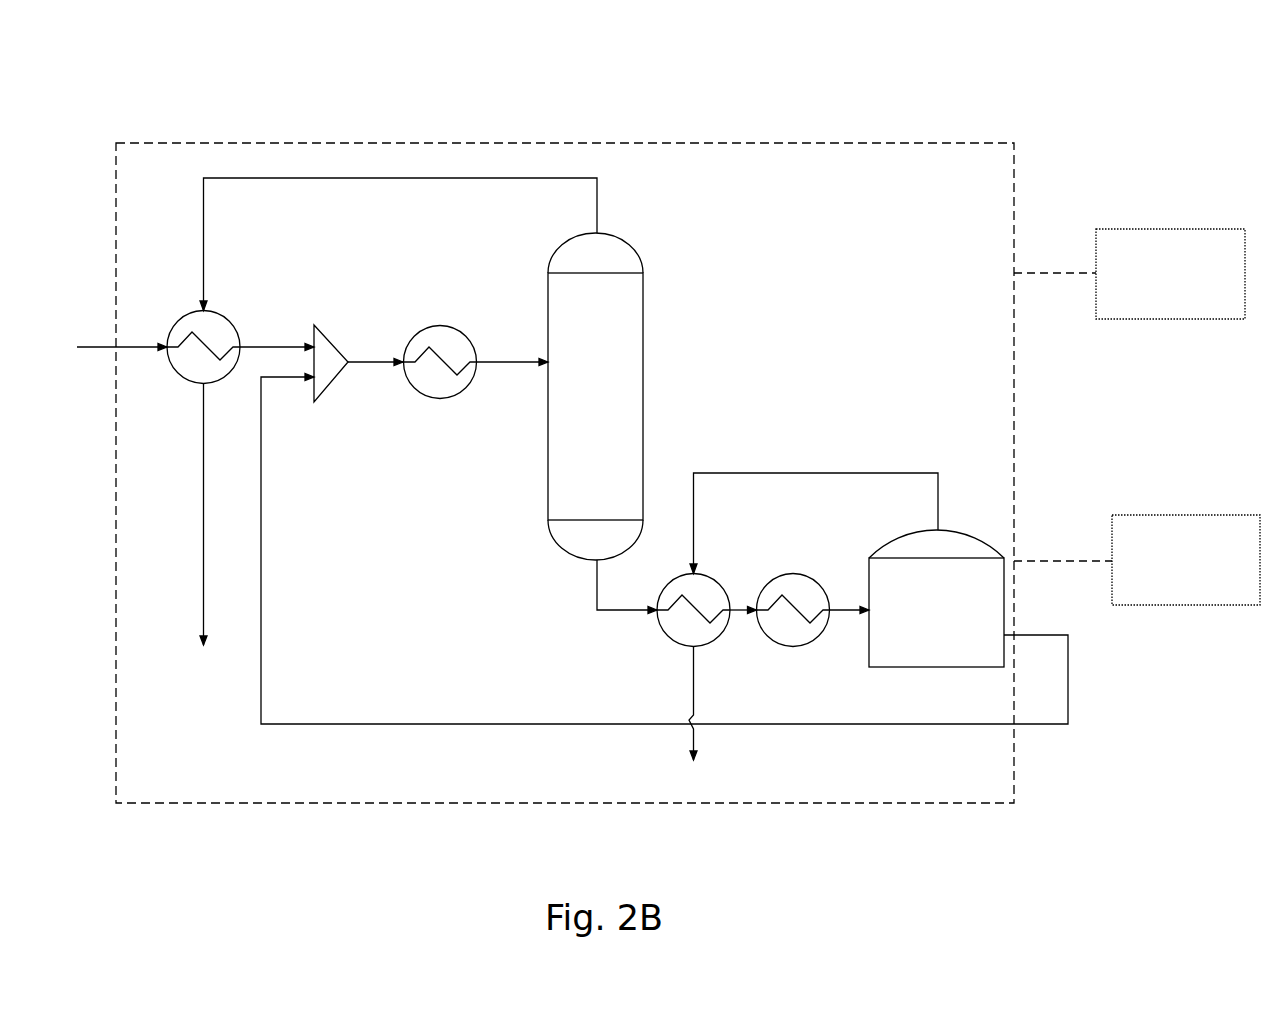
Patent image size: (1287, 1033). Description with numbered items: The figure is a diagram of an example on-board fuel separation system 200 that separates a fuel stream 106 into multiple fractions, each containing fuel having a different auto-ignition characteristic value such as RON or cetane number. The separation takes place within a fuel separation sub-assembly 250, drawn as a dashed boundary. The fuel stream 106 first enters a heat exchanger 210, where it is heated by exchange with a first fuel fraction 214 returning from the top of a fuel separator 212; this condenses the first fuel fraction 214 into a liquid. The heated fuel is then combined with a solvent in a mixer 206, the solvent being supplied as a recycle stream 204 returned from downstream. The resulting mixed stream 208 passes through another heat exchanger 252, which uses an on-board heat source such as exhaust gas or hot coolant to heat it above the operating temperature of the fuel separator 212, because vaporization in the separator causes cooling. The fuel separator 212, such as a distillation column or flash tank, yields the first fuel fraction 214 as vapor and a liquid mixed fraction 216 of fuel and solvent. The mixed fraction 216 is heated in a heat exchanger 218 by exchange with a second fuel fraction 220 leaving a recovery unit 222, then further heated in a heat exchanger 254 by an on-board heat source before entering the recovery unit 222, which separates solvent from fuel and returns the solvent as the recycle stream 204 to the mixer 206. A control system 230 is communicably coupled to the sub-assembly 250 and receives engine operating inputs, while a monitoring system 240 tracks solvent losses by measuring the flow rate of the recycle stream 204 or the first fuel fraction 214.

The on-board fuel separation system 200 is at (192, 79).
The fuel separation sub-assembly 250 is at (565, 473).
The fuel stream 106 is at (122, 337).
The heat exchanger 210 is at (199, 478).
The first fuel fraction 214 is at (398, 244).
The mixer 206 is at (321, 367).
The heat exchanger 252 is at (445, 374).
The mixed stream 208 is at (513, 354).
The fuel separator 212 is at (595, 396).
The mixed fraction 216 is at (627, 587).
The heat exchanger 218 is at (696, 667).
The second fuel fraction 220 is at (814, 513).
The heat exchanger 254 is at (813, 625).
The recovery unit 222 is at (936, 598).
The recycle stream 204 is at (664, 549).
The control system 230 is at (1129, 274).
The monitoring system 240 is at (1137, 560).